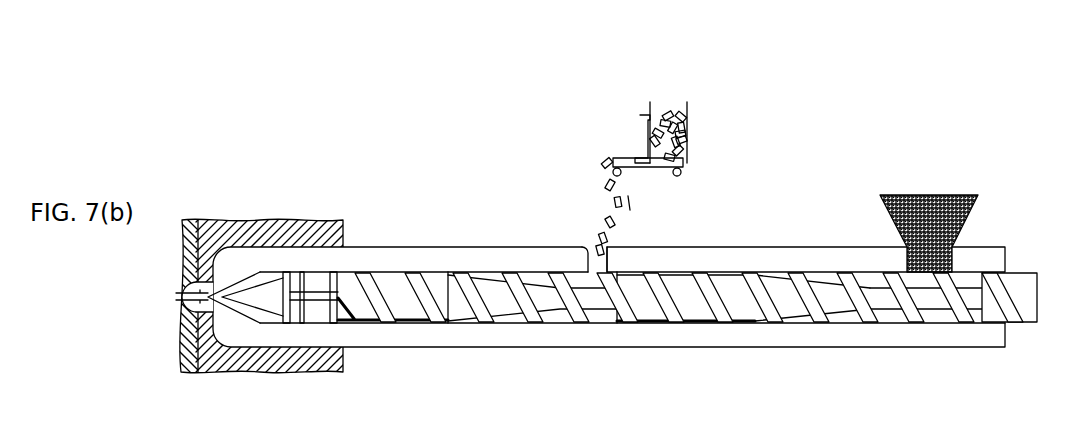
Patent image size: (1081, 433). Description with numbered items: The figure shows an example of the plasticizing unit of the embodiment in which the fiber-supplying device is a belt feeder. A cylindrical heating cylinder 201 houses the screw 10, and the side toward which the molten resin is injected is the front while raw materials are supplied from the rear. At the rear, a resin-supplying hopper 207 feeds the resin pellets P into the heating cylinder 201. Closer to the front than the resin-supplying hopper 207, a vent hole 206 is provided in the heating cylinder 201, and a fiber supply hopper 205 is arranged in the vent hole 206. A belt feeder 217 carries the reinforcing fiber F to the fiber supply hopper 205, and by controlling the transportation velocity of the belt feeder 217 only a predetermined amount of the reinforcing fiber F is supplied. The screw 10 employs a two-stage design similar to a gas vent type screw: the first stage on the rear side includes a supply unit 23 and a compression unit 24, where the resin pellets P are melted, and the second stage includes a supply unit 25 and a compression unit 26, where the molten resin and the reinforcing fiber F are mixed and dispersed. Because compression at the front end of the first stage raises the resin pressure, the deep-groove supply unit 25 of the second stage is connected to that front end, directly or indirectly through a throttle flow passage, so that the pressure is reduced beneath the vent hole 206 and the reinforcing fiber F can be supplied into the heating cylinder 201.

The heating cylinder 201 is at (370, 247).
The screw 10 is at (428, 272).
The vent hole 206 is at (583, 248).
The fiber supply hopper 205 is at (628, 224).
The belt feeder 217 is at (640, 103).
The reinforcing fiber F is at (687, 102).
The resin pellets P is at (927, 194).
The resin-supplying hopper 207 is at (976, 207).
The compression unit 26 is at (507, 305).
The supply unit 25 is at (603, 303).
The compression unit 24 is at (800, 300).
The supply unit 23 is at (948, 300).